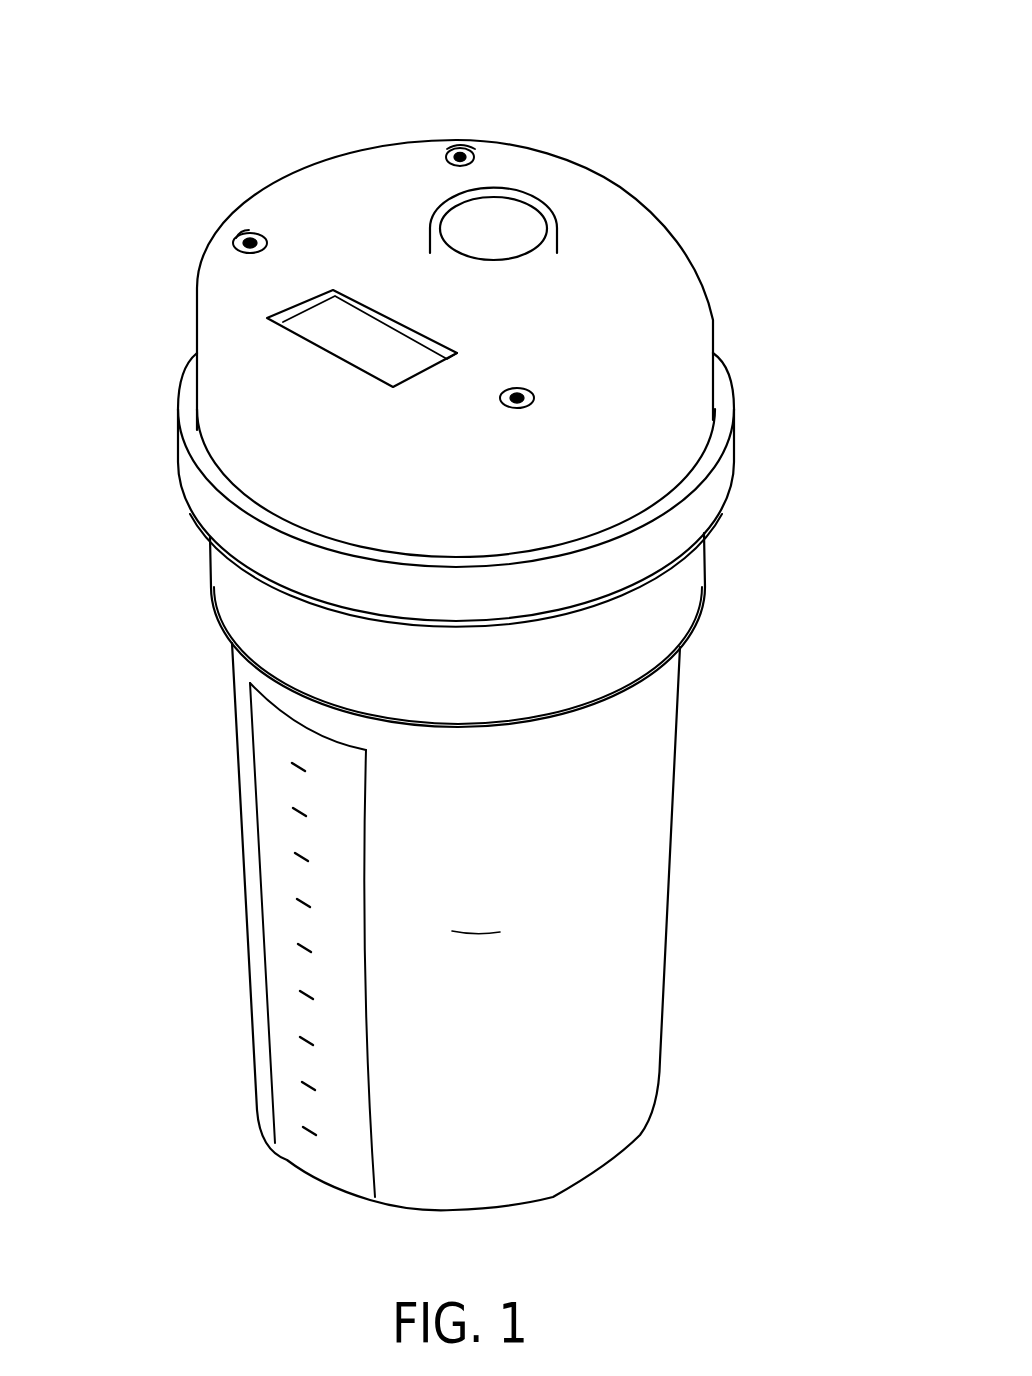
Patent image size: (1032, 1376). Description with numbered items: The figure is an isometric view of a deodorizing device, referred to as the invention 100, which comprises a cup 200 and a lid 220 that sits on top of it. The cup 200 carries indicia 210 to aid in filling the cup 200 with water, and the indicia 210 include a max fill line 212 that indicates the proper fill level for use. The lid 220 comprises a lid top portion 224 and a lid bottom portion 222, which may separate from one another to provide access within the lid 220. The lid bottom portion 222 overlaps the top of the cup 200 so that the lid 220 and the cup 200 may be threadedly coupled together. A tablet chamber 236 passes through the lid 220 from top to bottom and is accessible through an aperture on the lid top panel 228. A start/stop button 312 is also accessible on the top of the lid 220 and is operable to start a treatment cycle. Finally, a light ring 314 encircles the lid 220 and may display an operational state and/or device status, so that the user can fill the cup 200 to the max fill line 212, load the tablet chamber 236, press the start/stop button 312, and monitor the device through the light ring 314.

The invention 100 is at (712, 78).
The cup 200 is at (662, 998).
The indicia 210 is at (298, 945).
The max fill line 212 is at (480, 940).
The lid 220 is at (804, 116).
The lid bottom portion 222 is at (209, 550).
The lid top portion 224 is at (243, 210).
The lid top panel 228 is at (333, 213).
The tablet chamber 236 is at (282, 320).
The start/stop button 312 is at (472, 220).
The light ring 314 is at (178, 458).